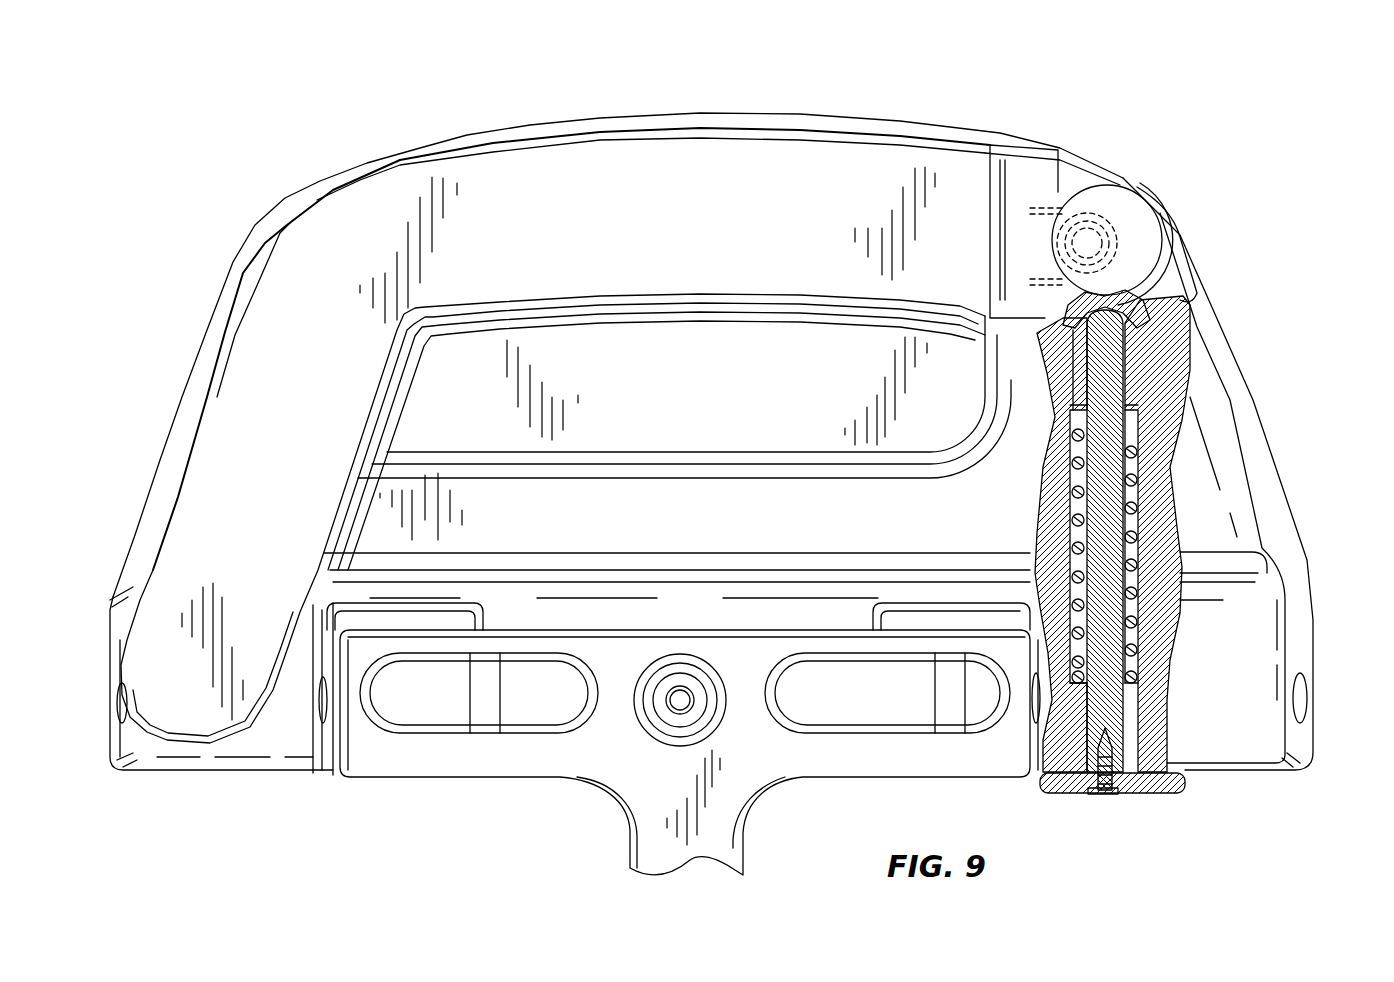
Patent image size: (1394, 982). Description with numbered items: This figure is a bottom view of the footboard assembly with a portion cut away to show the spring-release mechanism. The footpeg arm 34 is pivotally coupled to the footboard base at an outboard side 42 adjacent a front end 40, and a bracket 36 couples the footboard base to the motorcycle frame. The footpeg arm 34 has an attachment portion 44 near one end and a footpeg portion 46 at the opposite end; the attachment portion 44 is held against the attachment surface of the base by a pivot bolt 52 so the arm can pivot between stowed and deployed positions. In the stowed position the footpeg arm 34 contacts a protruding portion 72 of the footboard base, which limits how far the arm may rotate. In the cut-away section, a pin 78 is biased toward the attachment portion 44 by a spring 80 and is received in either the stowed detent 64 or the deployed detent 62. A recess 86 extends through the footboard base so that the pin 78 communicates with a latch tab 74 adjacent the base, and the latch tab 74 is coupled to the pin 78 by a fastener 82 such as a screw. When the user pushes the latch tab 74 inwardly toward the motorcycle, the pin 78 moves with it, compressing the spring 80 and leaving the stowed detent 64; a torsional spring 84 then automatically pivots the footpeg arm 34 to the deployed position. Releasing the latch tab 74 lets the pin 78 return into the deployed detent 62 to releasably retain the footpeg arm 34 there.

The footpeg arm 34 is at (581, 181).
The outboard side 42 is at (699, 116).
The attachment portion 44 is at (1023, 181).
The torsional spring 84 is at (1047, 205).
The deployed detent 62 is at (1131, 187).
The pivot bolt 52 is at (1140, 224).
The stowed detent 64 is at (1120, 333).
The pin 78 is at (1150, 373).
The spring 80 is at (1133, 485).
The front end 40 is at (1316, 607).
The footpeg portion 46 is at (224, 453).
The protruding portion 72 is at (706, 308).
The bracket 36 is at (633, 780).
The fastener 82 is at (1108, 793).
The latch tab 74 is at (1172, 794).
The recess 86 is at (1133, 654).